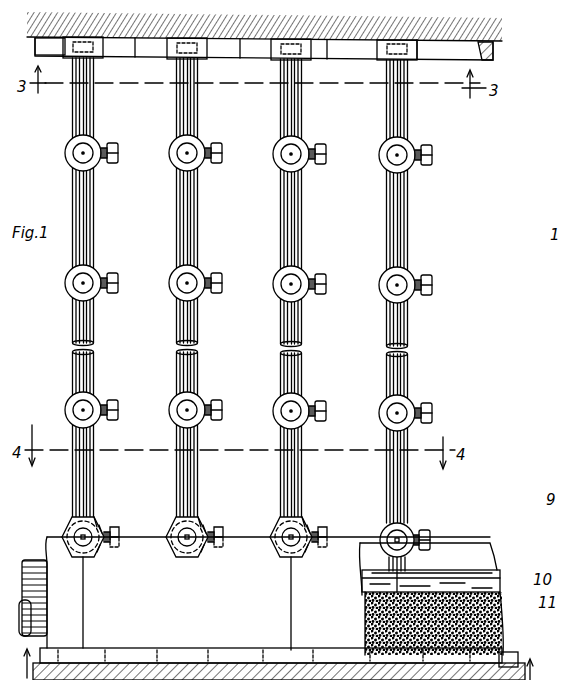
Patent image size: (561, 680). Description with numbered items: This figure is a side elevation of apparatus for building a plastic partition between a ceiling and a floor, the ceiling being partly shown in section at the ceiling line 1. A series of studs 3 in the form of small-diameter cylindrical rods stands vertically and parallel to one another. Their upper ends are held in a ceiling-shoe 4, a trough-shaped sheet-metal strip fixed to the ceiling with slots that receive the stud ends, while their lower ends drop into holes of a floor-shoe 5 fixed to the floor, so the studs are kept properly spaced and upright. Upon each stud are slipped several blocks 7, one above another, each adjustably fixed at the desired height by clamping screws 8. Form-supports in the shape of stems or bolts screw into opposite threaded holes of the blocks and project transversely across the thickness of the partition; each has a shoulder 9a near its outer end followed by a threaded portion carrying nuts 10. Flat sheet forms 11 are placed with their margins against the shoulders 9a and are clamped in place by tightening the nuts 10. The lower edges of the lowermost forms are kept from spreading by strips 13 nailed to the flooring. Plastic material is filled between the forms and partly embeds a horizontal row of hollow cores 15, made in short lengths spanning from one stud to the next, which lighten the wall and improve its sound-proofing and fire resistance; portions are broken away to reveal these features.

The ceiling line 1 is at (97, 4).
The studs 3 is at (95, 318).
The ceiling-shoe 4 is at (442, 60).
The floor-shoe 5 is at (509, 655).
The blocks 7 is at (70, 140).
The clamping screws 8 is at (113, 143).
The shoulder 9a is at (197, 520).
The nuts 10 is at (67, 519).
The forms 11 is at (46, 545).
The strips 13 is at (291, 656).
The cores 15 is at (31, 560).